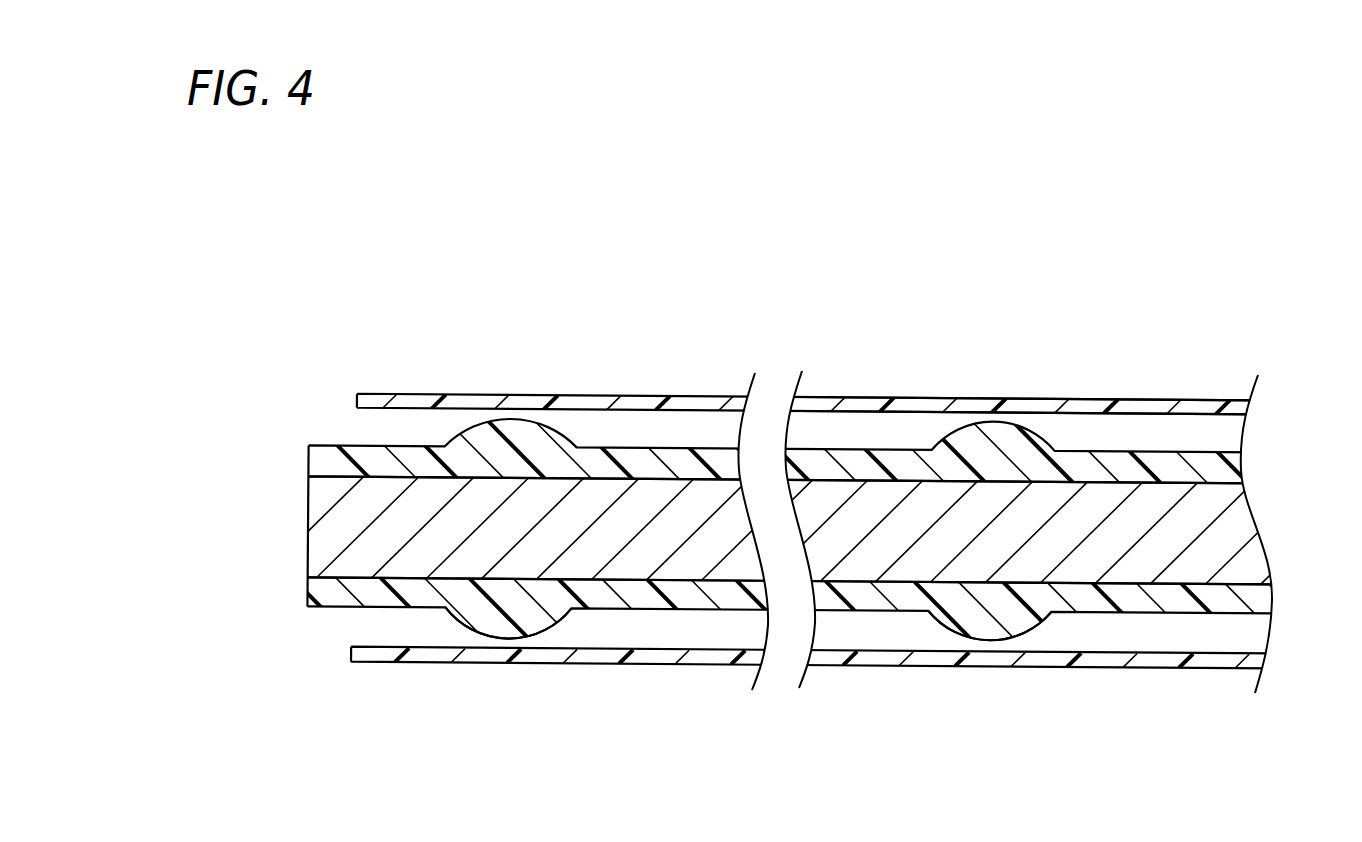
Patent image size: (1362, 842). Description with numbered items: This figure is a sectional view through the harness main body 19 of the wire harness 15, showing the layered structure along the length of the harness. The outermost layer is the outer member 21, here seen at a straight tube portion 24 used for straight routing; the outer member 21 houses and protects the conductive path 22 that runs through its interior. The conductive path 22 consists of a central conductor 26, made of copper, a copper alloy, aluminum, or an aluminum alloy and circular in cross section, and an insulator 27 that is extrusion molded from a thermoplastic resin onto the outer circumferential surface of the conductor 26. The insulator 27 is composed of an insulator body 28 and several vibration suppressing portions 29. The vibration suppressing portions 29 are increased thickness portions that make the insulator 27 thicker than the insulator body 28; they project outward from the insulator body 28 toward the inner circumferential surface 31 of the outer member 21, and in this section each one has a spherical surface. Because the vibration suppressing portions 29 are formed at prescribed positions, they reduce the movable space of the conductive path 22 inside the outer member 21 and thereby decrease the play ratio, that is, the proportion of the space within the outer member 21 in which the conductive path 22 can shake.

The wire harness 15 is at (781, 443).
The harness main body 19 is at (1008, 322).
The outer member 21 is at (643, 395).
The conductive path 22 is at (688, 447).
The straight tube portion 24 is at (1140, 412).
The conductor 26 is at (342, 517).
The insulator 27 is at (328, 592).
The insulator body 28 is at (385, 610).
The vibration suppressing portion 29 is at (498, 628).
The inner circumferential surface 31 is at (1208, 418).